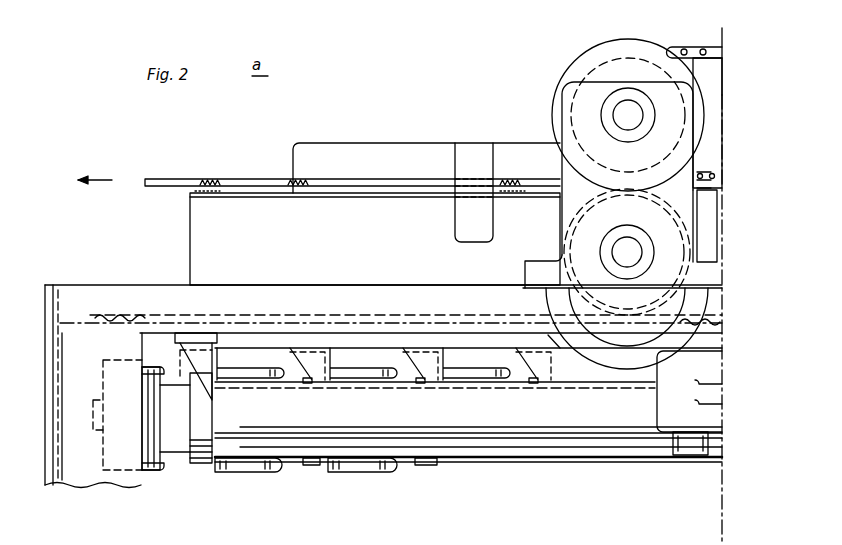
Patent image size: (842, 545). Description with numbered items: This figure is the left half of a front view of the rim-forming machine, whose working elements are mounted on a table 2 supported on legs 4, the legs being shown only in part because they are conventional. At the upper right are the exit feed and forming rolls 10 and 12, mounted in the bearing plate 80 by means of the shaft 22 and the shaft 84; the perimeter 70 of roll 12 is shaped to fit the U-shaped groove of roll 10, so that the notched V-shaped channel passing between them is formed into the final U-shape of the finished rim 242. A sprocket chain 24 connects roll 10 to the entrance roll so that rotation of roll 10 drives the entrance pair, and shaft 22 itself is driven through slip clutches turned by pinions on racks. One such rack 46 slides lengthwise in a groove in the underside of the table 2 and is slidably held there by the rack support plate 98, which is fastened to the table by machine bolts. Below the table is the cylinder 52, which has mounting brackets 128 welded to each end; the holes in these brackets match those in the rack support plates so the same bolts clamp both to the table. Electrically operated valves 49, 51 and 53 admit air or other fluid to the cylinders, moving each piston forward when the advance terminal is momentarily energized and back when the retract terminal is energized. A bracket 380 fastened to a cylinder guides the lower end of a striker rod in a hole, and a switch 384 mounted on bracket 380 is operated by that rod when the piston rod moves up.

The table 2 is at (147, 285).
The legs 4 is at (50, 440).
The exit roll 10 is at (582, 64).
The exit roll 12 is at (592, 222).
The shaft 22 is at (624, 254).
The sprocket chain 24 is at (691, 50).
The rack 46 is at (128, 318).
The valve 49 is at (360, 468).
The valve 51 is at (252, 470).
The cylinder 52 is at (480, 452).
The valve 53 is at (150, 462).
The perimeter of roll 70 is at (588, 297).
The bearing plate 80 is at (570, 108).
The shaft 84 is at (634, 116).
The rack support plate 98 is at (556, 342).
The mounting brackets 128 is at (219, 357).
The finished rim 242 is at (184, 180).
The bracket 380 is at (660, 372).
The switch 384 is at (657, 402).